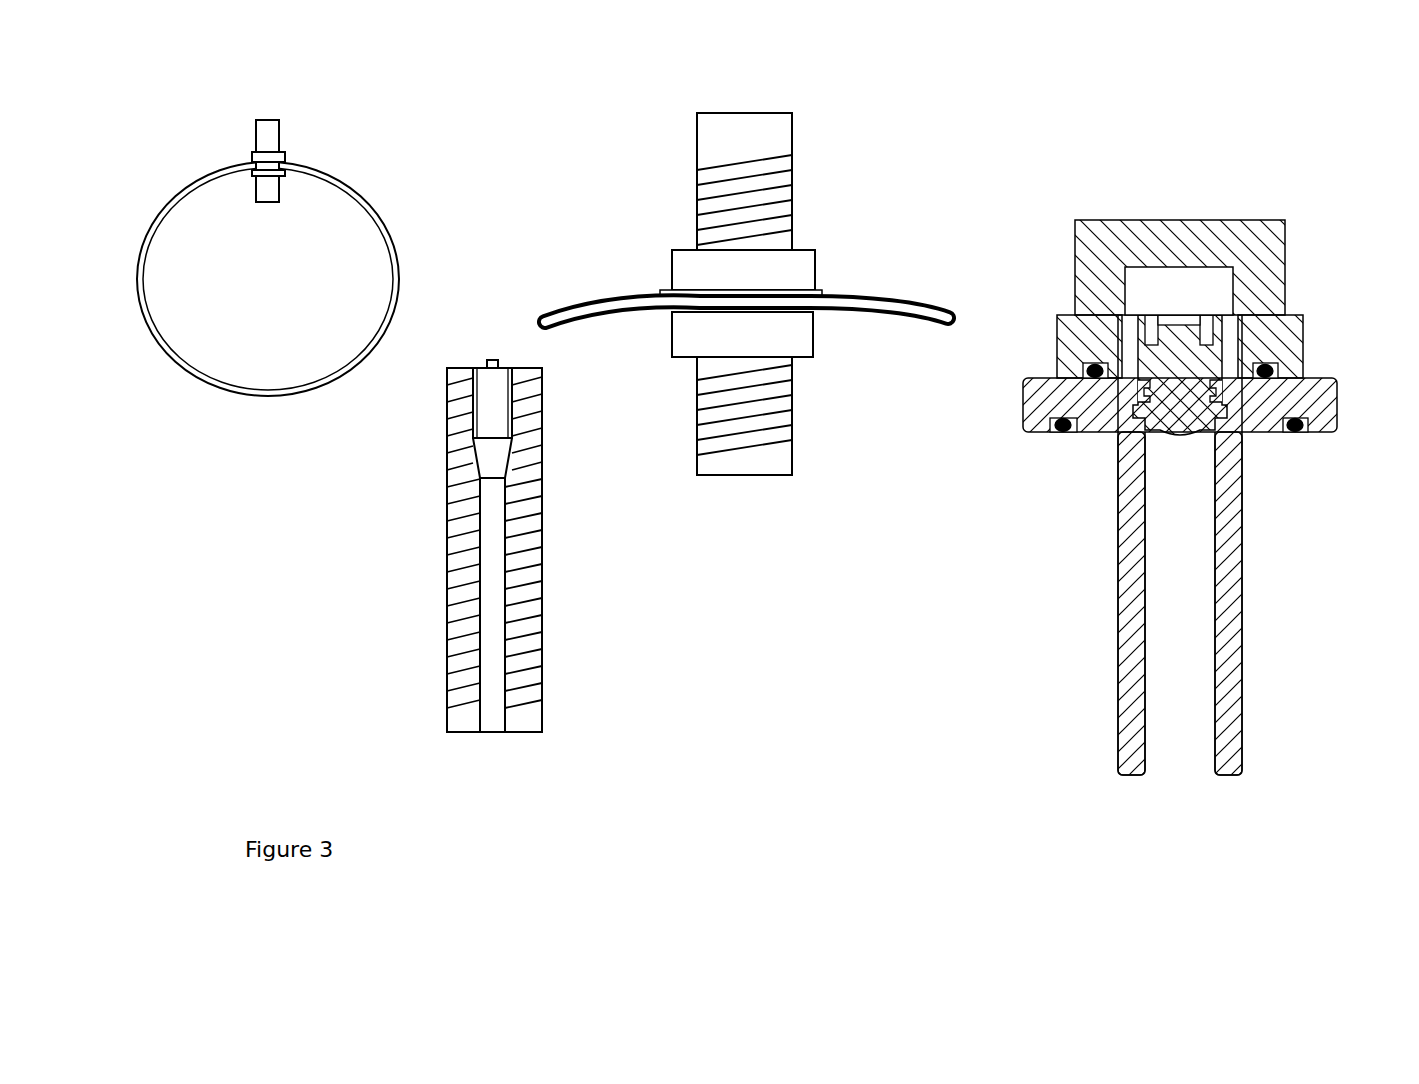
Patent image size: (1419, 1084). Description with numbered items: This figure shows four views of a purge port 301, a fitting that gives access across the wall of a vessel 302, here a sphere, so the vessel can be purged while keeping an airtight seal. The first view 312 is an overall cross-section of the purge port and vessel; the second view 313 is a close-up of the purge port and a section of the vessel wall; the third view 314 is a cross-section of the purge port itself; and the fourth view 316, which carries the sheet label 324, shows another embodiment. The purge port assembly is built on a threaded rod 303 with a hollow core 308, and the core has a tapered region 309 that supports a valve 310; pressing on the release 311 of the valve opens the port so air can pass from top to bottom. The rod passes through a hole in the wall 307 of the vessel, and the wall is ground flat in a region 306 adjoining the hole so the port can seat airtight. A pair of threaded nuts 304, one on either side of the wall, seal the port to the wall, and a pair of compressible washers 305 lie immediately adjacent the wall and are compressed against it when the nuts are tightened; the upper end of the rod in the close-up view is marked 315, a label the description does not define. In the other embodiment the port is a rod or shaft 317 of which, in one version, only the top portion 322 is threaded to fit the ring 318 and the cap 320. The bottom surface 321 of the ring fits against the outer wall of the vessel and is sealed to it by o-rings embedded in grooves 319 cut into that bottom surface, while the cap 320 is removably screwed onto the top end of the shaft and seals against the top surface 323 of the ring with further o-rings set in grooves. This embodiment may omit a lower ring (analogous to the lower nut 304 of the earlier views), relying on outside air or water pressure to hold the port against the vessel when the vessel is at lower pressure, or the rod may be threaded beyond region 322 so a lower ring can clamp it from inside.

The purge port 301 is at (289, 152).
The vessel 302 is at (404, 244).
The threaded rod 303 is at (713, 190).
The threaded nuts 304 is at (798, 268).
The compressible washers 305 is at (820, 298).
The ground flat region 306 is at (660, 300).
The wall of the vessel 307 is at (563, 311).
The hollow core 308 is at (497, 497).
The tapered region 309 is at (503, 453).
The valve 310 is at (485, 402).
The release 311 is at (496, 356).
The first view 312 is at (287, 280).
The second view 313 is at (722, 305).
The third view 314 is at (544, 561).
The rod end 315 is at (772, 106).
The fourth view 316 is at (1282, 438).
The shaft 317 is at (1056, 438).
The ring 318 is at (688, 350).
The grooves 319 is at (1147, 234).
The cap 320 is at (1270, 360).
The bottom surface of the ring 321 is at (1082, 362).
The top portion of the rod 322 is at (1132, 437).
The top surface of the ring 323 is at (1040, 376).
The sectional assembly 324 is at (1187, 501).